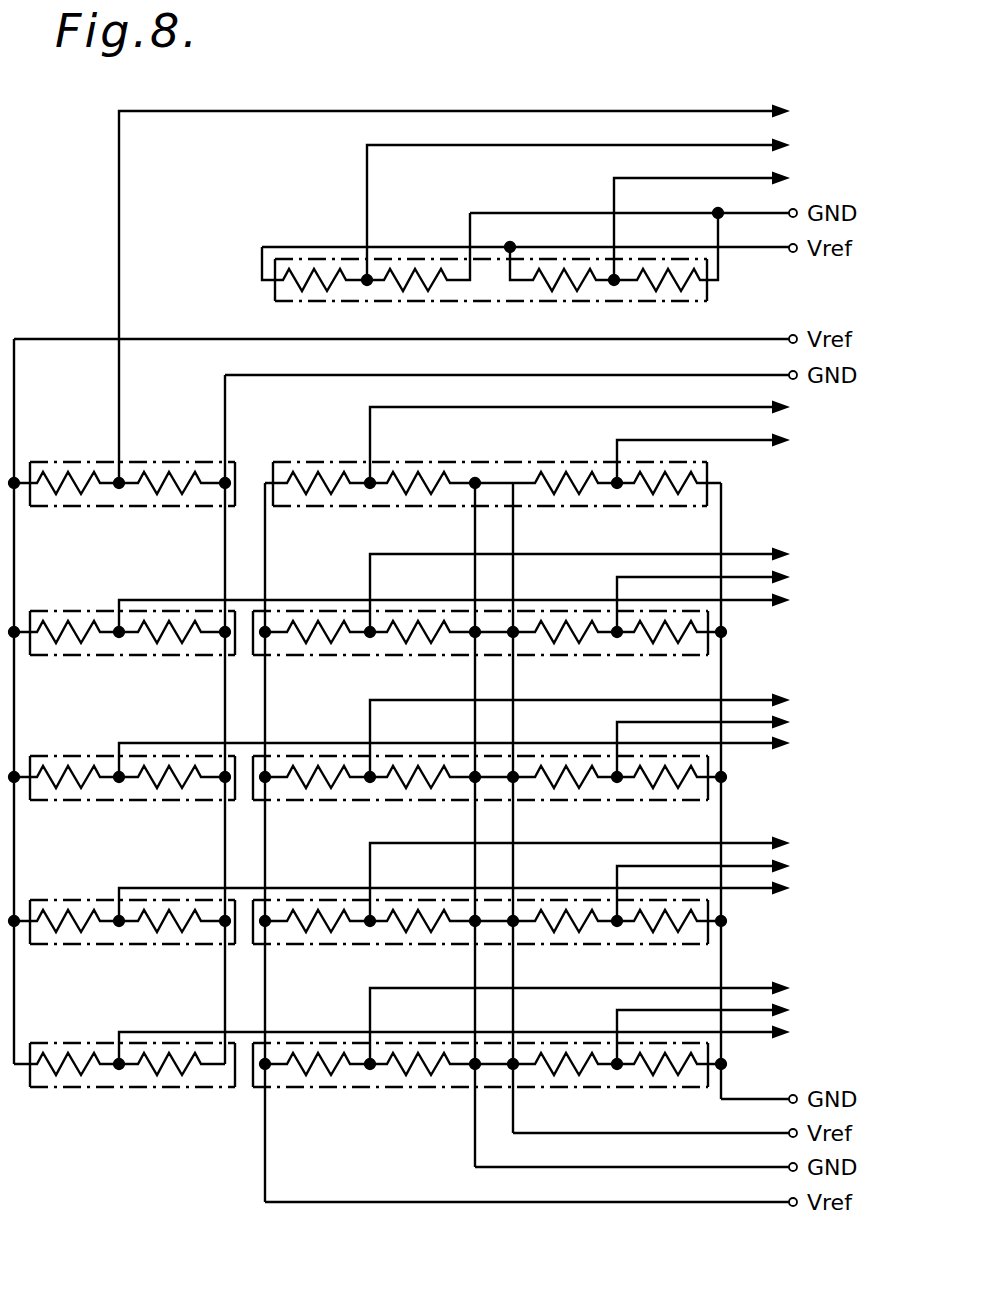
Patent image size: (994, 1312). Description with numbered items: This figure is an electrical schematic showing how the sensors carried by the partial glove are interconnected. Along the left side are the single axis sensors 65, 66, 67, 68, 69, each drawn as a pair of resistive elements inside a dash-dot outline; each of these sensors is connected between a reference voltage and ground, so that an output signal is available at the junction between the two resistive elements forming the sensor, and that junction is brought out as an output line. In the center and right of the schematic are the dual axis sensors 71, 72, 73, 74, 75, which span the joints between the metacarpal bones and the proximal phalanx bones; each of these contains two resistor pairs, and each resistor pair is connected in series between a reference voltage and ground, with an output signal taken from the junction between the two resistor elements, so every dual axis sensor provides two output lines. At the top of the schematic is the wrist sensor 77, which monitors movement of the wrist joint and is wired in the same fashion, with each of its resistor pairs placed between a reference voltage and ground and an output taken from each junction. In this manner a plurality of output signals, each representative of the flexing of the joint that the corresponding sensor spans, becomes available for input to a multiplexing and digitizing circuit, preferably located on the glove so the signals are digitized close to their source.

The single axis sensor 65 is at (150, 508).
The single axis sensor 66 is at (152, 656).
The single axis sensor 67 is at (148, 800).
The single axis sensor 68 is at (132, 945).
The single axis sensor 69 is at (148, 1088).
The dual axis sensor 71 is at (390, 508).
The dual axis sensor 72 is at (388, 657).
The dual axis sensor 73 is at (390, 801).
The dual axis sensor 74 is at (422, 945).
The dual axis sensor 75 is at (430, 1089).
The wrist sensor 77 is at (345, 303).